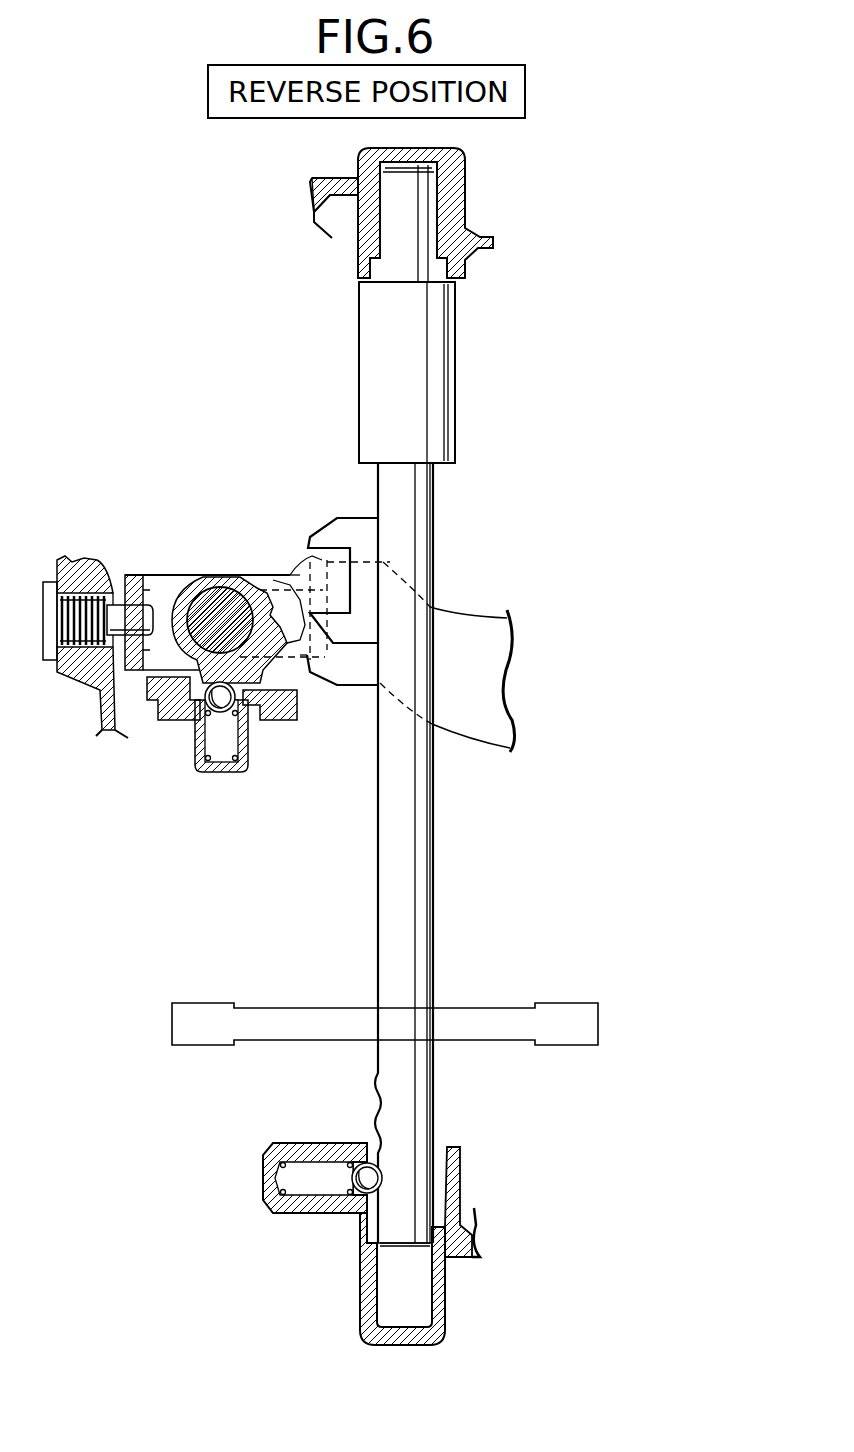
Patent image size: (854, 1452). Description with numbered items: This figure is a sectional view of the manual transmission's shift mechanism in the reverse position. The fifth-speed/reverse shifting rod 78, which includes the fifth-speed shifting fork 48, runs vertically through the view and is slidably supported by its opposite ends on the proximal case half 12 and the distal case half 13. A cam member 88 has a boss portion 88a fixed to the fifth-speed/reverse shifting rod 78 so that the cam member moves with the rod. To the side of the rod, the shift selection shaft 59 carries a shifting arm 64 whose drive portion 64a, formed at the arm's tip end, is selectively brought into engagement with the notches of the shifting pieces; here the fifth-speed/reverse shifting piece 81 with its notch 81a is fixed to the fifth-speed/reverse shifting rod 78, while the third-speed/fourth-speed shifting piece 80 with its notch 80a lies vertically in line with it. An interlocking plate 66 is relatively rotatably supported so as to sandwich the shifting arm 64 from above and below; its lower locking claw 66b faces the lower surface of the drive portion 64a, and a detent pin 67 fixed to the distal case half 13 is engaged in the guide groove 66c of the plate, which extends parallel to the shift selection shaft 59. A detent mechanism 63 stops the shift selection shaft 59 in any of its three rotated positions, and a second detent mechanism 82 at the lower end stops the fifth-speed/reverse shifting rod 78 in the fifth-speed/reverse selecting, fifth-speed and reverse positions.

The proximal case half 12 is at (463, 213).
The distal case half 13 is at (78, 668).
The fifth-speed shifting fork 48 is at (253, 1020).
The shift selection shaft 59 is at (230, 610).
The detent mechanism 63 is at (185, 728).
The shifting arm 64 is at (220, 574).
The drive portion 64a is at (305, 578).
The interlocking plate 66 is at (183, 574).
The lower locking claw 66b is at (152, 728).
The guide groove 66c is at (130, 610).
The detent pin 67 is at (163, 663).
The fifth-speed/reverse shifting rod 78 is at (415, 958).
The third-speed/fourth-speed shifting piece 80 is at (449, 607).
The notch 80a is at (309, 662).
The fifth-speed/reverse shifting piece 81 is at (353, 518).
The notch 81a is at (288, 560).
The detent mechanism 82 is at (328, 1138).
The cam member 88 is at (357, 352).
The boss portion 88a is at (443, 405).